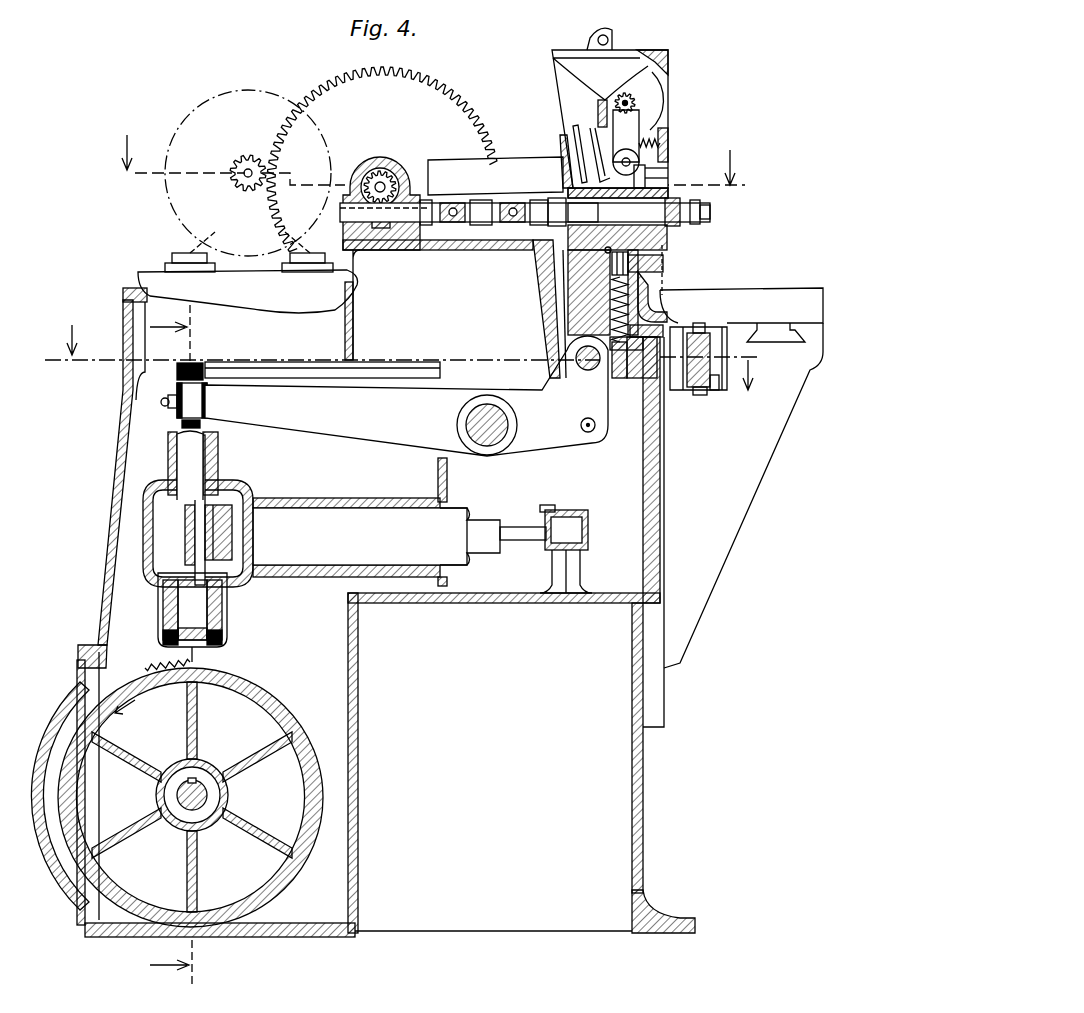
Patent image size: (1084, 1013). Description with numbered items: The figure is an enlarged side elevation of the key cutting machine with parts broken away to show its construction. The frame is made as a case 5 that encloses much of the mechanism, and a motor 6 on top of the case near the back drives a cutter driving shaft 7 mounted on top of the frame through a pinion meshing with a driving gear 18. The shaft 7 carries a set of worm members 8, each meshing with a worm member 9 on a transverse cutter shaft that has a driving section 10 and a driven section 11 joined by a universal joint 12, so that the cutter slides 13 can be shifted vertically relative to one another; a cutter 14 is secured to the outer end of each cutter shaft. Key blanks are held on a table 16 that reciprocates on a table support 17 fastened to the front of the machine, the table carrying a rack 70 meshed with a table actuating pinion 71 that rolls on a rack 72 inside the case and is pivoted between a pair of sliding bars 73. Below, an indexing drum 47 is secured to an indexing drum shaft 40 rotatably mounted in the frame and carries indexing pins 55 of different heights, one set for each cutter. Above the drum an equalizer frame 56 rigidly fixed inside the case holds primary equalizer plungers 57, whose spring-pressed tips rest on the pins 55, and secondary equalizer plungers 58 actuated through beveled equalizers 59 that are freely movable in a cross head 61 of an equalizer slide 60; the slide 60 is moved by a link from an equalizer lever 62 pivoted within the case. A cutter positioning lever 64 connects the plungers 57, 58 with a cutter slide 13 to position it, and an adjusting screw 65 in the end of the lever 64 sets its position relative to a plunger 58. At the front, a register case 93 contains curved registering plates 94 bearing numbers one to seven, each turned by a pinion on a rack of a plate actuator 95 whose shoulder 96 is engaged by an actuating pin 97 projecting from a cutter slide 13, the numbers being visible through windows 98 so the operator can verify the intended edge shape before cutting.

The case 5 is at (112, 520).
The motor 6 is at (185, 252).
The cutter driving shaft 7 is at (381, 180).
The worm members 8 is at (432, 176).
The worm member 9 is at (380, 228).
The driving section 10 is at (348, 212).
The driven section 11 is at (560, 205).
The universal joint 12 is at (488, 205).
The cutter slides 13 is at (575, 255).
The cutters 14 is at (698, 218).
The table 16 is at (760, 296).
The table support 17 is at (758, 448).
The driving gear 18 is at (468, 125).
The indexing drum shaft 40 is at (207, 795).
The indexing drum 47 is at (292, 722).
The indexing pins 55 is at (158, 665).
The equalizer frame 56 is at (447, 487).
The primary equalizer plungers 57 is at (205, 610).
The secondary equalizer plungers 58 is at (196, 470).
The equalizers 59 is at (195, 535).
The equalizer slide 60 is at (355, 512).
The cross head 61 is at (226, 535).
The equalizer lever 62 is at (590, 532).
The cutter positioning lever 64 is at (340, 420).
The adjusting screw 65 is at (202, 365).
The rack 70 is at (698, 325).
The table actuating pinion 71 is at (712, 330).
The rack 72 is at (695, 393).
The sliding bars 73 is at (716, 388).
The register case 93 is at (668, 53).
The registering plates 94 is at (663, 90).
The plate actuator 95 is at (637, 138).
The shoulder 96 is at (665, 150).
The actuating pin 97 is at (647, 178).
The windows 98 is at (665, 108).